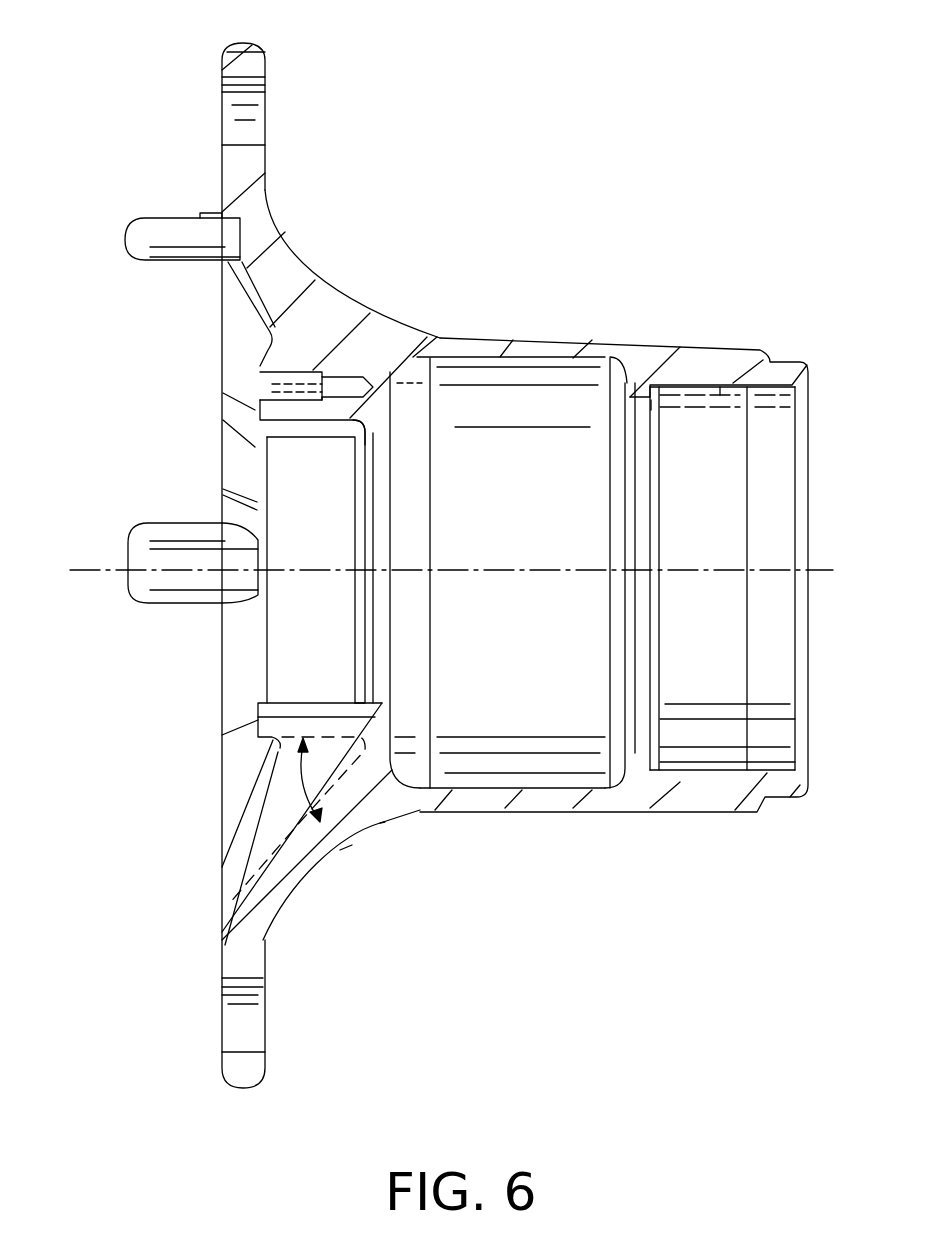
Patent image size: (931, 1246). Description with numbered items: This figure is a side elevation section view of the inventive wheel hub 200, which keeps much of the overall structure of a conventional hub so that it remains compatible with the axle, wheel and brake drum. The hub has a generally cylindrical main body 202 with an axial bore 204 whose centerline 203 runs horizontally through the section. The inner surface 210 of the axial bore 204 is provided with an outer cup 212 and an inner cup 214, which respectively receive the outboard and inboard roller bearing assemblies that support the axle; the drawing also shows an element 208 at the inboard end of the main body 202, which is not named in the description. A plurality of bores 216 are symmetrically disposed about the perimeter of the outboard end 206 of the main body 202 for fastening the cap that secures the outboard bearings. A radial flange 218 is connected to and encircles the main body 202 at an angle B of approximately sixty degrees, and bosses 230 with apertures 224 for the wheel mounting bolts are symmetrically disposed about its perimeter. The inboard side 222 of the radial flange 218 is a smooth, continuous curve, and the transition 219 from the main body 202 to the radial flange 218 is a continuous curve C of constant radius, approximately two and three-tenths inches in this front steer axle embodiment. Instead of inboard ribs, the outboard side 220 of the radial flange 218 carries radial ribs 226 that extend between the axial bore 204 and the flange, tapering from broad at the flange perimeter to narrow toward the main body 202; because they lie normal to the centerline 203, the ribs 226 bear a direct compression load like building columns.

The wheel hub 200 is at (657, 120).
The main body 202 is at (660, 345).
The centerline 203 is at (95, 573).
The axial bore 204 is at (493, 622).
The outboard end 206 is at (260, 369).
The ring 208 is at (807, 365).
The inner surface 210 is at (283, 430).
The outer cup 212 is at (290, 705).
The inner cup 214 is at (651, 400).
The bores 216 is at (272, 388).
The radial flange 218 is at (222, 62).
The transition 219 is at (385, 822).
The outboard side 220 is at (232, 285).
The inboard side 222 is at (283, 217).
The apertures 224 is at (222, 118).
The radial ribs 226 is at (257, 302).
The bosses 230 is at (268, 58).
The angle B is at (317, 787).
The curve C is at (350, 843).